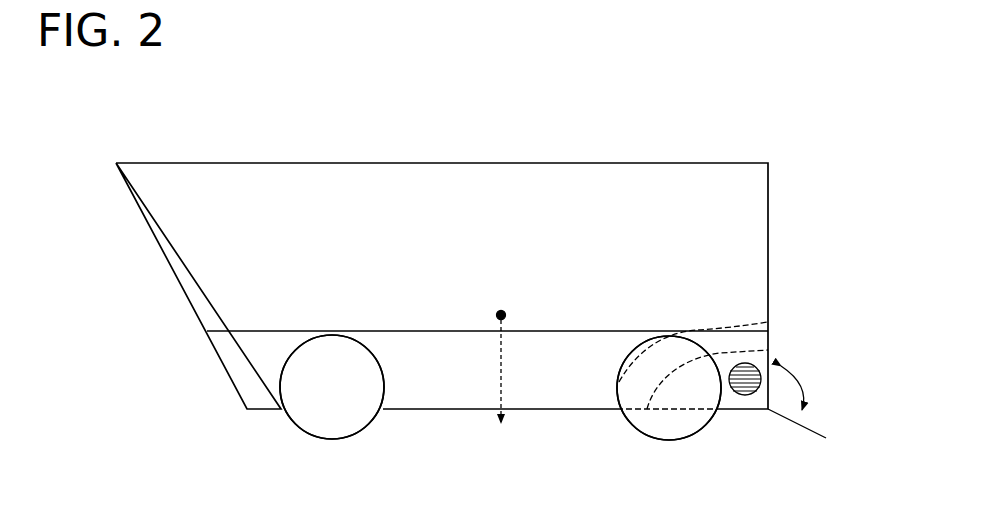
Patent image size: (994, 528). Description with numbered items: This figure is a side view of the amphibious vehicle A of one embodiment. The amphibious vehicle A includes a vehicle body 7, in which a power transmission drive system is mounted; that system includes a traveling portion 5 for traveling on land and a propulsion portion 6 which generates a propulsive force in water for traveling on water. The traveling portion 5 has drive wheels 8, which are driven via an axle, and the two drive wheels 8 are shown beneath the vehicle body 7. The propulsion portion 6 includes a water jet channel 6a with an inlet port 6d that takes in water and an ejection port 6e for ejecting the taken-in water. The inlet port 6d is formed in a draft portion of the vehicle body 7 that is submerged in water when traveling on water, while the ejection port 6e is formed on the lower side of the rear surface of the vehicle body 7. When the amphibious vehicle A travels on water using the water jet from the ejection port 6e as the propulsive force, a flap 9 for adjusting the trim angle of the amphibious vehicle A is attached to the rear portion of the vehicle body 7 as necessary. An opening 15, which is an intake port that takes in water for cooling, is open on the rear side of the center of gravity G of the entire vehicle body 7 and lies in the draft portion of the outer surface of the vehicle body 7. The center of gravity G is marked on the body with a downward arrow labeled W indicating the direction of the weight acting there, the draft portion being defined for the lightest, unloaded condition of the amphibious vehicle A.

The amphibious vehicle A is at (712, 128).
The vehicle body 7 is at (241, 160).
The propulsion portion 6 is at (740, 312).
The water jet channel 6a is at (727, 322).
The inlet port 6d is at (620, 412).
The ejection port 6e is at (770, 340).
The opening (intake port) 15 is at (758, 366).
The flap 9 is at (800, 426).
The drive wheel 8 is at (332, 440).
The traveling portion 5 is at (500, 387).
The center of gravity G is at (501, 299).
The weight direction W is at (501, 394).